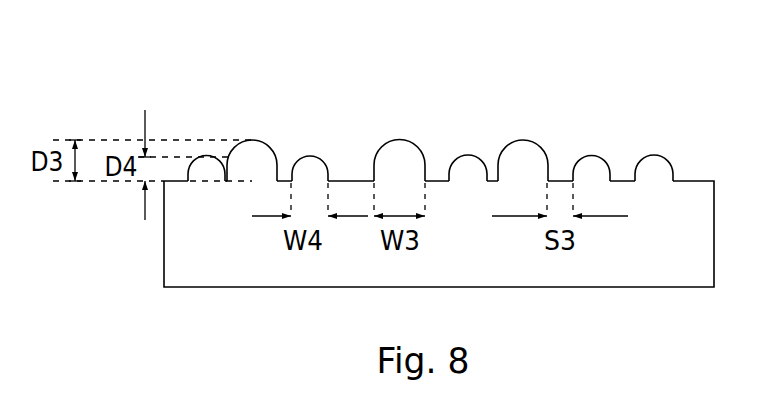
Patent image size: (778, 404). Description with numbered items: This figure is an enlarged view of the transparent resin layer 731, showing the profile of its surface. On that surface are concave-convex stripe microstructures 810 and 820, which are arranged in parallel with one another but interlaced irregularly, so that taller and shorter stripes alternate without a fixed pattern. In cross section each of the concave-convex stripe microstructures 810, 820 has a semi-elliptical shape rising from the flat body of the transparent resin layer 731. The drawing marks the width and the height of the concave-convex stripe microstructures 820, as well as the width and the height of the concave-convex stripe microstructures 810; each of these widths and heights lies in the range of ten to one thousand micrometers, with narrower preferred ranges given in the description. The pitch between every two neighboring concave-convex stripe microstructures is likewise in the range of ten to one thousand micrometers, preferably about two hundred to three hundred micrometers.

The transparent resin layer 731 is at (87, 76).
The concave-convex stripe microstructure 820 is at (310, 172).
The concave-convex stripe microstructure 810 is at (405, 165).